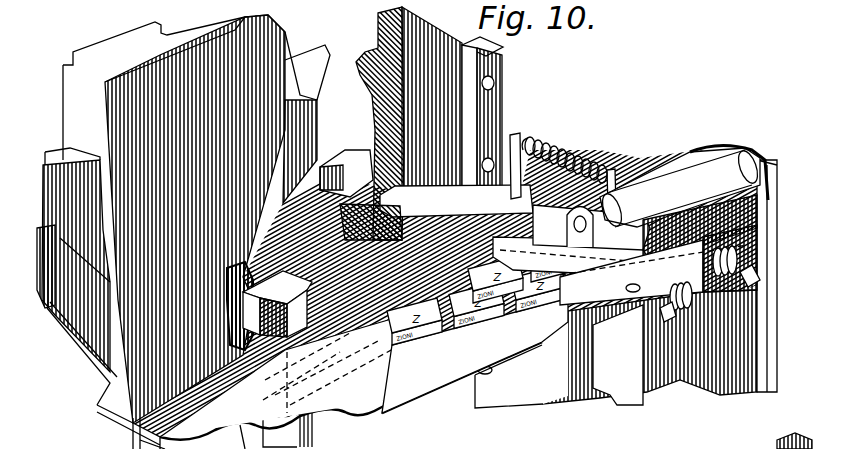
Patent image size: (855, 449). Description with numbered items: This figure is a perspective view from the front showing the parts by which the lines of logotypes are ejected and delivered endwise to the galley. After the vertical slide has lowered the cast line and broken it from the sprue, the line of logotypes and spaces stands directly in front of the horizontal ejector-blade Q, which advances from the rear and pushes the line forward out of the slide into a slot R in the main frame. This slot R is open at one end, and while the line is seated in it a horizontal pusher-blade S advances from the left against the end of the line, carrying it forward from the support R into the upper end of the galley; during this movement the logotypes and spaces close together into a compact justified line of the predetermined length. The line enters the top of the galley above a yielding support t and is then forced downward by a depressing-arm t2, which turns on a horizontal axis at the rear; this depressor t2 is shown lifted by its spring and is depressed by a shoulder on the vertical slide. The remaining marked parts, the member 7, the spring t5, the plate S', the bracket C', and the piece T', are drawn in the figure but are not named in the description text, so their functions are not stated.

The pusher-blade S is at (427, 224).
The lug 7 is at (367, 143).
The ejector-blade Q is at (427, 224).
The spring t5 is at (570, 150).
The depressing-arm t2 is at (757, 168).
The yielding support t is at (750, 258).
The slot R is at (512, 361).
The plate S' is at (292, 377).
The bracket C' is at (427, 224).
The stop T' is at (427, 224).